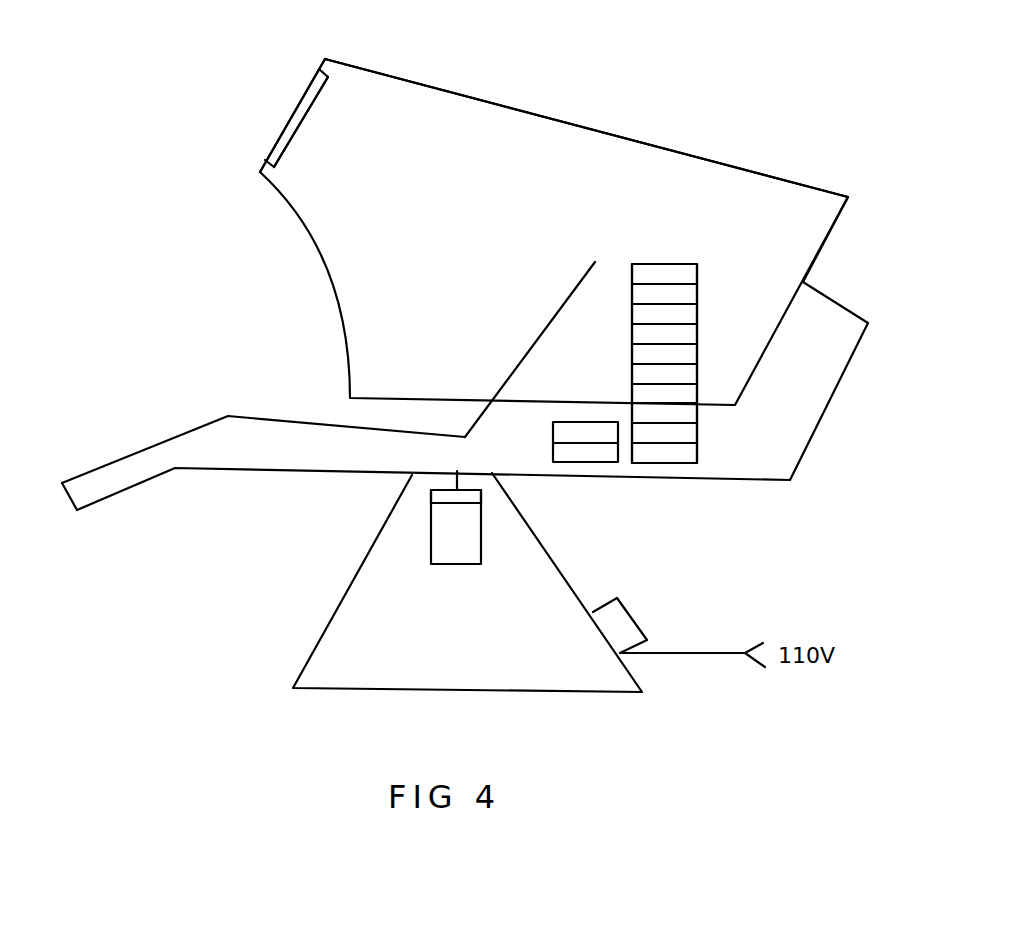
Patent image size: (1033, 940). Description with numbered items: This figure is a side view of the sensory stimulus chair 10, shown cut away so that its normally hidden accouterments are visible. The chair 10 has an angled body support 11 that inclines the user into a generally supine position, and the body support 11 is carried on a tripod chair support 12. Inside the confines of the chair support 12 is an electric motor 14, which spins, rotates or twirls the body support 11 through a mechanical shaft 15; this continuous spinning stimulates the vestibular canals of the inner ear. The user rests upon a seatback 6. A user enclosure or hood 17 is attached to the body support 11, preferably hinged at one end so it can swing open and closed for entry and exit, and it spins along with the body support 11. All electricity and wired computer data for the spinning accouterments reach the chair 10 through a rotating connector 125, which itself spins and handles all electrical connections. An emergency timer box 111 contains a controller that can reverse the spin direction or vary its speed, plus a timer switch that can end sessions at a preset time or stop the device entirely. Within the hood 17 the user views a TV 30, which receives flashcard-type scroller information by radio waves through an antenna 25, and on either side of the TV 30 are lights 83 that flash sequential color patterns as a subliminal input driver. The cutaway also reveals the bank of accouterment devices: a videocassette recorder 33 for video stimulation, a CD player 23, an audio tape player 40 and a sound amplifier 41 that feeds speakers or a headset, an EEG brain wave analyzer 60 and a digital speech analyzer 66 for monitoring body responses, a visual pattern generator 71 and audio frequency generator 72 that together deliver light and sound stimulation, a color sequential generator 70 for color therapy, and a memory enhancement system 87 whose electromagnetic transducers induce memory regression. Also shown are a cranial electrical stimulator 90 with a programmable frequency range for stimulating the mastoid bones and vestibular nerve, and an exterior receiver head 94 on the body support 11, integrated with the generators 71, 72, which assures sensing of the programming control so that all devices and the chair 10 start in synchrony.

The sensory stimulus chair 10 is at (655, 110).
The hood 17 is at (718, 165).
The seatback 6 is at (570, 292).
The TV 30 is at (313, 102).
The lights 83 is at (283, 135).
The antenna 25 is at (669, 262).
The body support 11 is at (309, 482).
The chair support 12 is at (342, 602).
The mechanical shaft 15 is at (458, 485).
The rotating connector 125 is at (482, 502).
The electric motor 14 is at (481, 555).
The emergency timer box 111 is at (679, 627).
The videocassette recorder 33 is at (664, 274).
The CD player 23 is at (664, 294).
The audio tape player 40 is at (664, 314).
The sound amplifier 41 is at (664, 334).
The EEG brain wave analyzer 60 is at (664, 354).
The digital speech analyzer 66 is at (664, 374).
The visual pattern generator 71 is at (664, 394).
The audio frequency generator 72 is at (664, 413).
The color sequential generator 70 is at (664, 433).
The memory enhancement system 87 is at (664, 453).
The cranial electrical stimulator 90 is at (585, 433).
The exterior receiver head 94 is at (585, 453).